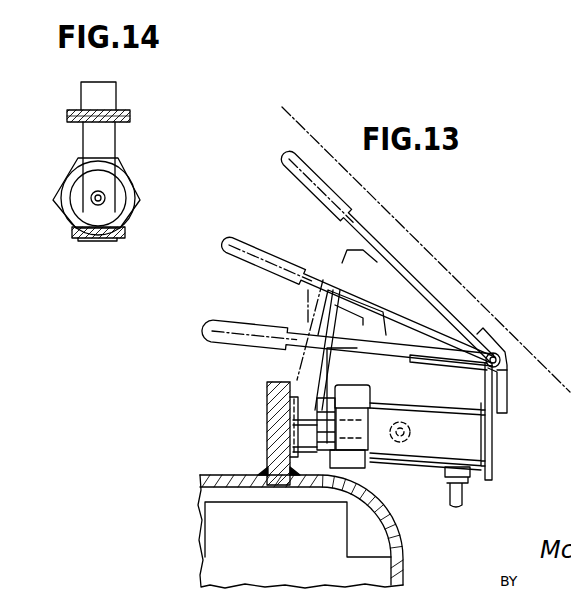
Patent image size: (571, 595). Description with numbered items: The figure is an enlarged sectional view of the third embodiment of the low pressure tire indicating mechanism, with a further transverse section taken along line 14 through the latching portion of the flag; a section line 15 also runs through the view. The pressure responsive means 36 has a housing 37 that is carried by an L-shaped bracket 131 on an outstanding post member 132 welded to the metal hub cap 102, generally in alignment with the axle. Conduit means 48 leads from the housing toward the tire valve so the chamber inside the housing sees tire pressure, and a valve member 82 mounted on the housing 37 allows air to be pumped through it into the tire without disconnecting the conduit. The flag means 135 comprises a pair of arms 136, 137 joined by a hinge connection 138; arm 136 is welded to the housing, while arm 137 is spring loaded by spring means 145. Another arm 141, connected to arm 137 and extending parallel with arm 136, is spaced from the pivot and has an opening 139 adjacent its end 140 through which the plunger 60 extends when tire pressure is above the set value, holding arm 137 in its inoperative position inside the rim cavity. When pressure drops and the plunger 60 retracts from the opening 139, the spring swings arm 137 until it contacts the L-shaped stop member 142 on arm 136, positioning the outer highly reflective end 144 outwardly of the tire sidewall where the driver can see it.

In FIG. 13, the section line 14 is at (304, 303).
In FIG. 13, the section line 15 is at (317, 102).
In FIG. 13, the pressure responsive means 36 is at (407, 457).
In FIG. 13, the housing 37 is at (428, 408).
In FIG. 13, the conduit means 48 is at (463, 497).
In FIG. 14, the plunger 60 is at (85, 207).
In FIG. 13, the plunger 60 is at (308, 395).
In FIG. 13, the valve member 82 is at (412, 435).
In FIG. 13, the metal hub cap 102 is at (402, 535).
In FIG. 14, the L-shaped bracket 131 is at (85, 240).
In FIG. 13, the L-shaped bracket 131 is at (313, 453).
In FIG. 13, the outstanding post member 132 is at (272, 413).
In FIG. 13, the flag means 135 is at (345, 346).
In FIG. 13, the arm 136 is at (485, 455).
In FIG. 14, the arm 137 is at (72, 112).
In FIG. 13, the arm 137 is at (385, 337).
In FIG. 14, the hinge connection 138 is at (88, 137).
In FIG. 13, the hinge connection 138 is at (498, 355).
In FIG. 14, the opening 139 is at (105, 190).
In FIG. 14, the end 140 is at (120, 212).
In FIG. 14, the arm 141 is at (113, 142).
In FIG. 13, the arm 141 is at (325, 370).
In FIG. 14, the L-shaped stop member 142 is at (116, 97).
In FIG. 13, the L-shaped stop member 142 is at (503, 397).
In FIG. 13, the outer highly reflective end 144 is at (237, 340).
In FIG. 13, the spring means 145 is at (433, 361).